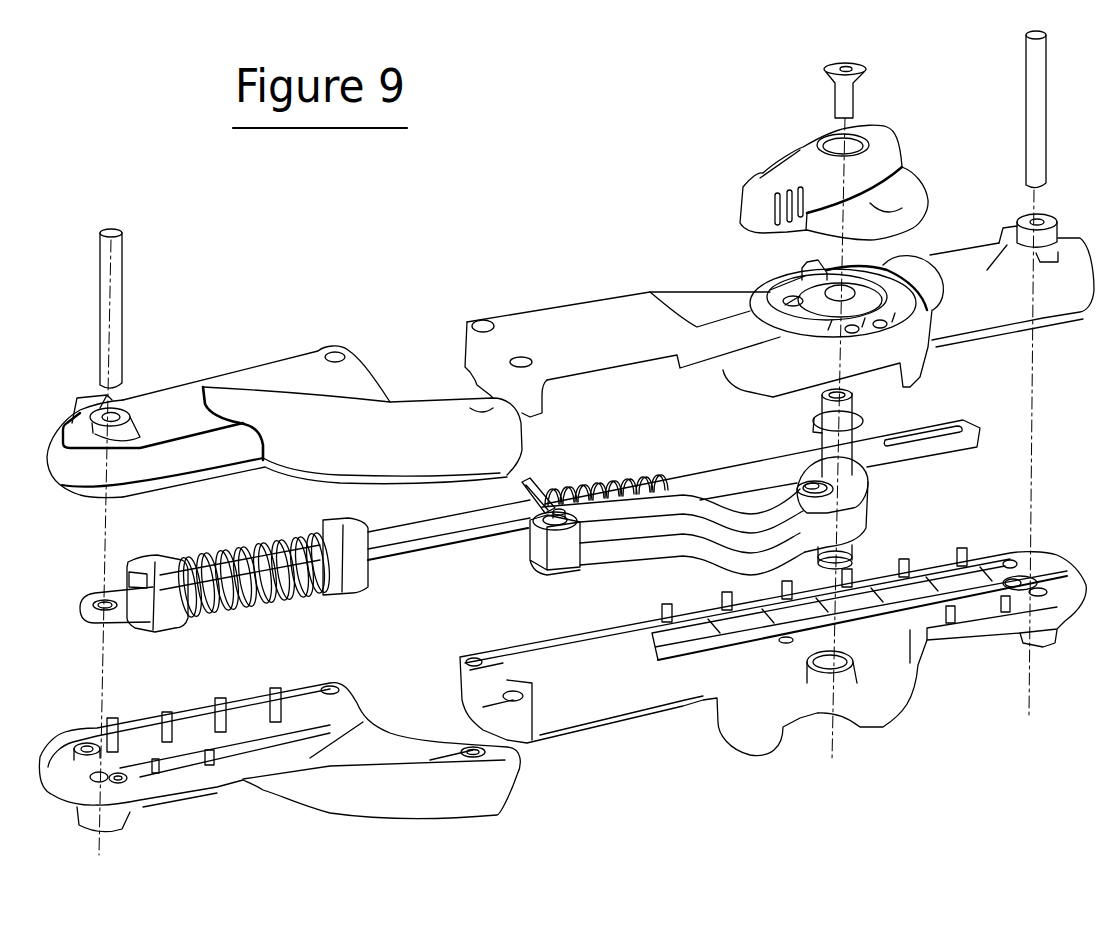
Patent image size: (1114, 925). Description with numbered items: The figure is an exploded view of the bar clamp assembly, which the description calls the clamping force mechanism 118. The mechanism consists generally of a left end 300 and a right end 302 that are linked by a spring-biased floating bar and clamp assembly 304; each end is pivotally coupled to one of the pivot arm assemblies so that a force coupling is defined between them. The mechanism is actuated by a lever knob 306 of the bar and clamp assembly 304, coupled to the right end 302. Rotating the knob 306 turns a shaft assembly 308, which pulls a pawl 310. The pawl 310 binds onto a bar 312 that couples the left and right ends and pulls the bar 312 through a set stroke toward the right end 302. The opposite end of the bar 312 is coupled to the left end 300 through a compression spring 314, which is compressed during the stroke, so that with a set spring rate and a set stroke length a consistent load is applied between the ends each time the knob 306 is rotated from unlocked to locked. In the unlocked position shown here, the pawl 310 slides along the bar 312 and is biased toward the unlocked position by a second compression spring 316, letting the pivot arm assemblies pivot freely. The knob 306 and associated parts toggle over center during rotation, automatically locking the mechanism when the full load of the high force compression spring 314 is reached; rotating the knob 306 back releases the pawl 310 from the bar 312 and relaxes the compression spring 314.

The clamping force mechanism 118 is at (579, 264).
The left end 300 is at (209, 816).
The right end 302 is at (915, 690).
The spring-biased floating bar and clamp assembly 304 is at (445, 563).
The lever knob 306 is at (753, 167).
The shaft assembly 308 is at (674, 505).
The pawl 310 is at (523, 483).
The bar 312 is at (500, 543).
The compression spring 314 is at (245, 605).
The compression spring 316 is at (647, 462).